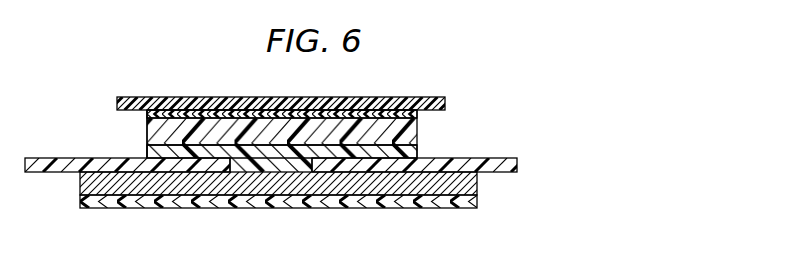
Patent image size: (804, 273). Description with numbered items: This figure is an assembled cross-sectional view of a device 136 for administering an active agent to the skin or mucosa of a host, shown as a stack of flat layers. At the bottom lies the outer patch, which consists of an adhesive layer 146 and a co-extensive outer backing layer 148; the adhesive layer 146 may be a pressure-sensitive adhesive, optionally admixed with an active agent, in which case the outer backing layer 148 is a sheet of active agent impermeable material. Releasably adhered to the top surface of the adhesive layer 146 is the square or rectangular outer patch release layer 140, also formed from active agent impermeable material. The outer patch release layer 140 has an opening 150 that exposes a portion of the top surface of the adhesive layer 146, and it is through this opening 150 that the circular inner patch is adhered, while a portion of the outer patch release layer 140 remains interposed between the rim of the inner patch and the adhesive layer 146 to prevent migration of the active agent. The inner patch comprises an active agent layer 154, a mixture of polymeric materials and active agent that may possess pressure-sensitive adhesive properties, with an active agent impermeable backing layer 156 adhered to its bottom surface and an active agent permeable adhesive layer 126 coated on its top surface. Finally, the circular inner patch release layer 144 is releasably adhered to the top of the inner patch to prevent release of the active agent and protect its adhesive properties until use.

The device 136 is at (517, 58).
The inner patch release layer 144 is at (399, 101).
The active agent permeable adhesive layer 126 is at (418, 122).
The active agent impermeable backing layer 156 is at (418, 146).
The active agent layer 154 is at (147, 137).
The opening 150 is at (263, 160).
The outer patch release layer 140 is at (518, 161).
The adhesive layer 146 is at (478, 195).
The outer backing layer 148 is at (453, 208).